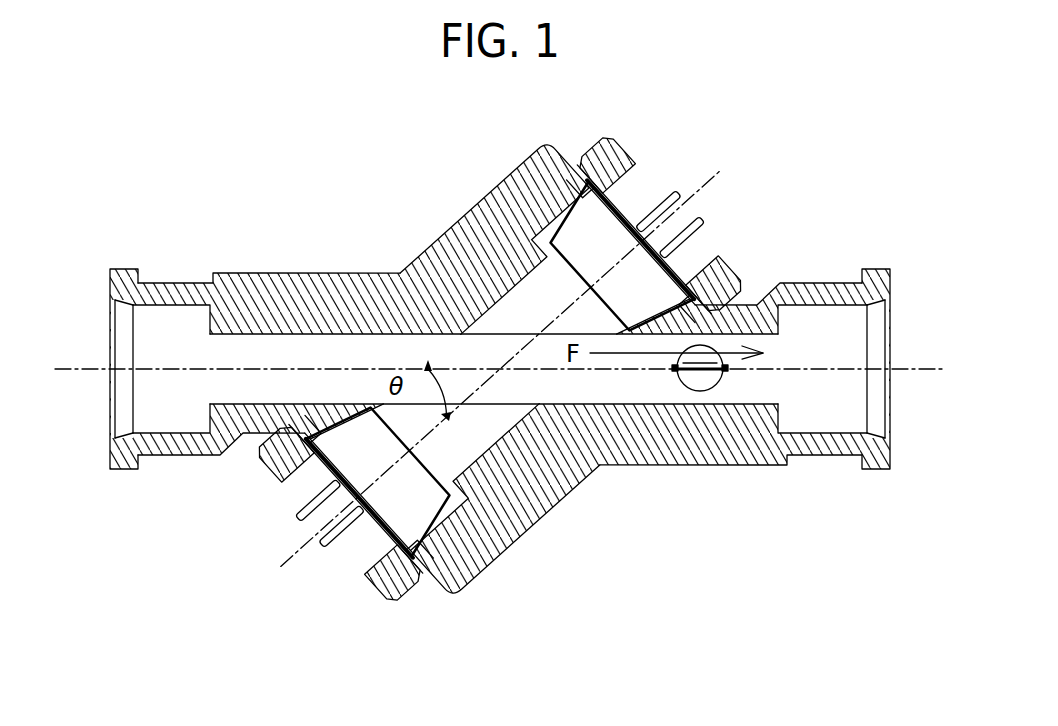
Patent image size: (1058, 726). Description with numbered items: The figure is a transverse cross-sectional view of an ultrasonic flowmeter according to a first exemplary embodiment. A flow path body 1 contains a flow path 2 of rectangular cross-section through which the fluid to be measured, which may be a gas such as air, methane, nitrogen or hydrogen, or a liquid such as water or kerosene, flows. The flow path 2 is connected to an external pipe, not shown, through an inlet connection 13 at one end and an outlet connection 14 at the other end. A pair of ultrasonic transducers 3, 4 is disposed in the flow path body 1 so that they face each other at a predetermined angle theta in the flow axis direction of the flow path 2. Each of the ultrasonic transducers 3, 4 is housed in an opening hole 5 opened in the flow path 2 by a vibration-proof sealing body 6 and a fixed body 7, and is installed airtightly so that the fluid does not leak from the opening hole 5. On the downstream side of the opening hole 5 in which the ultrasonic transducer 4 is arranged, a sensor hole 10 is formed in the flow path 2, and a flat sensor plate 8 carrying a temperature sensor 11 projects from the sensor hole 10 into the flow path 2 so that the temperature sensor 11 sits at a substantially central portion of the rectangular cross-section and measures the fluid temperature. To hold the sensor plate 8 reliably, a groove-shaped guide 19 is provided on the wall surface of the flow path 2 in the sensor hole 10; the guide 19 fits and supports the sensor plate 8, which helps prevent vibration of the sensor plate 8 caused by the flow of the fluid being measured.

The flow path body 1 is at (323, 300).
The flow path 2 is at (275, 350).
The ultrasonic transducer 3 is at (382, 458).
The ultrasonic transducer 4 is at (602, 248).
The opening hole 5 is at (543, 297).
The vibration-proof sealing body 6 is at (702, 368).
The fixed body 7 is at (710, 372).
The sensor plate 8 is at (697, 372).
The sensor hole 10 is at (712, 376).
The temperature sensor 11 is at (730, 305).
The inlet connection 13 is at (167, 330).
The outlet connection 14 is at (823, 335).
The groove-shaped guide 19 is at (676, 371).